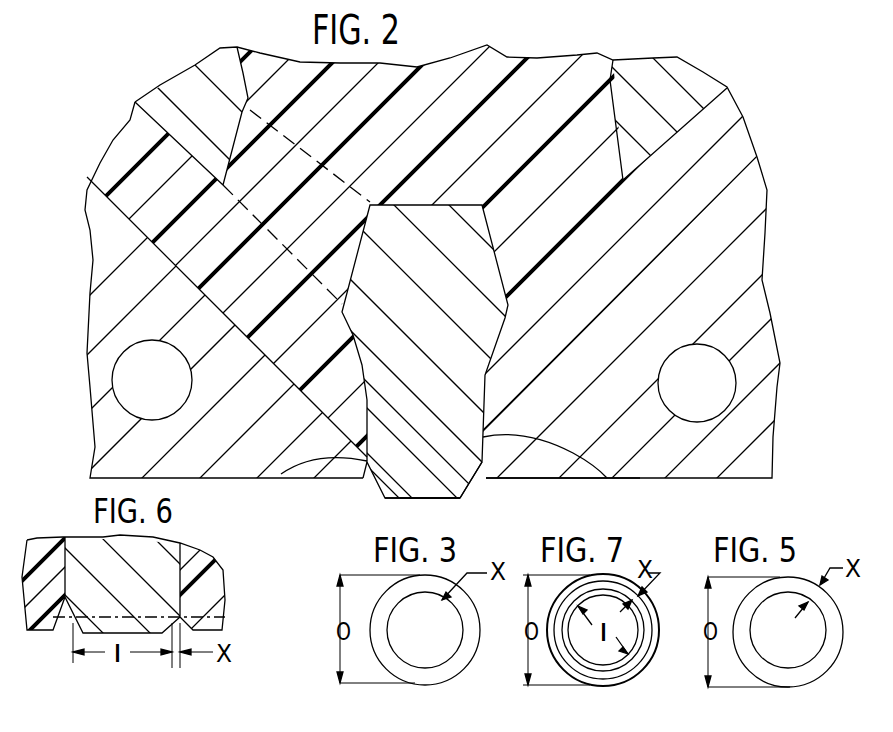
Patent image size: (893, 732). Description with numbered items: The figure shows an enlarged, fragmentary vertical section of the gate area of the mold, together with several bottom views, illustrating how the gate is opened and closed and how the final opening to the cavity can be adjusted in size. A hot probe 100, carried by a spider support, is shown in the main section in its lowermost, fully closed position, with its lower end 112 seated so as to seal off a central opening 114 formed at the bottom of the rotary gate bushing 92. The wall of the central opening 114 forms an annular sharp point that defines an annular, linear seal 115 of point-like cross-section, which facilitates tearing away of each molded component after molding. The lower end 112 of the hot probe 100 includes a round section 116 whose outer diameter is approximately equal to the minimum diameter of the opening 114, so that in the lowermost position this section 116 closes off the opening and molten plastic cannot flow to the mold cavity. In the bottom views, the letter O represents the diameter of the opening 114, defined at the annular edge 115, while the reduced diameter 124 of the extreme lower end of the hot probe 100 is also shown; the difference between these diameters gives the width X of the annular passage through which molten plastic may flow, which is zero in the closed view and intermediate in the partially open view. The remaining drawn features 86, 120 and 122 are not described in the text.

In FIG. 2, the weld material 86 is at (540, 65).
In FIG. 2, the rotary gate bushing 92 is at (763, 272).
In FIG. 2, the hot probe 100 is at (443, 277).
In FIG. 2, the lower end of the hot probe 112 is at (455, 501).
In FIG. 2, the central opening 114 is at (567, 481).
In FIG. 7, the central opening 114 is at (608, 687).
In FIG. 5, the central opening 114 is at (838, 663).
In FIG. 2, the annular linear seal 115 is at (281, 474).
In FIG. 2, the round section 116 is at (607, 478).
In FIG. 3, the round section 116 is at (473, 663).
In FIG. 2, the gap 120 is at (363, 481).
In FIG. 2, the chamfer 122 is at (467, 498).
In FIG. 2, the reduced diameter 124 is at (383, 499).
In FIG. 3, the reduced diameter 124 is at (435, 670).
In FIG. 7, the reduced diameter 124 is at (622, 666).
In FIG. 5, the reduced diameter 124 is at (797, 670).